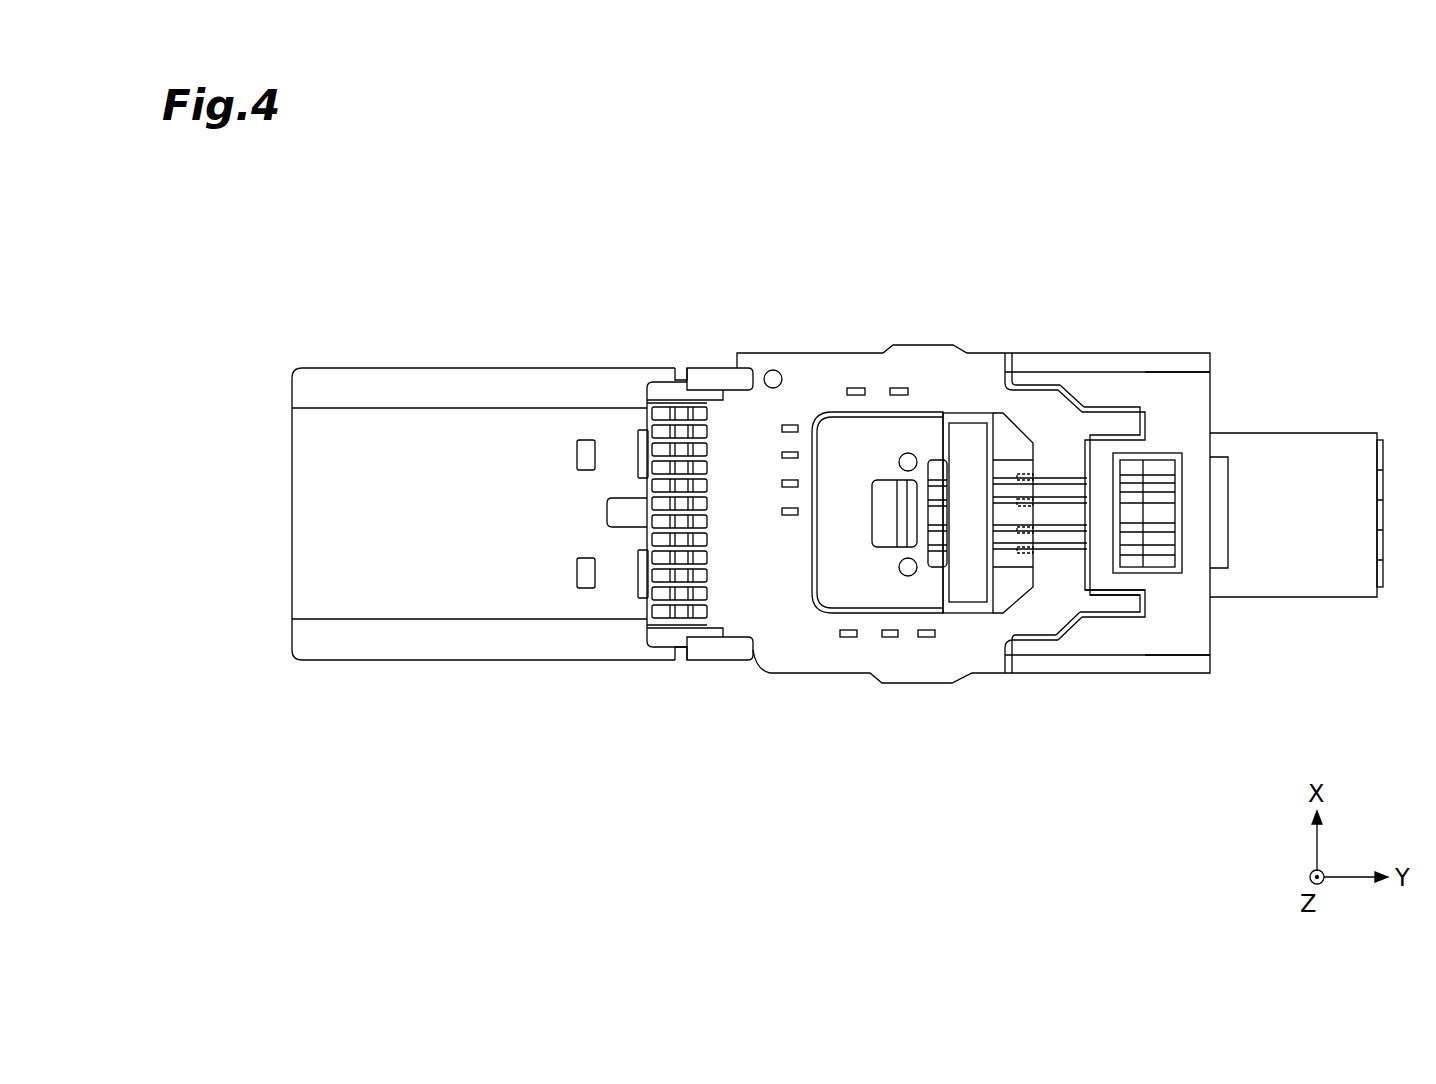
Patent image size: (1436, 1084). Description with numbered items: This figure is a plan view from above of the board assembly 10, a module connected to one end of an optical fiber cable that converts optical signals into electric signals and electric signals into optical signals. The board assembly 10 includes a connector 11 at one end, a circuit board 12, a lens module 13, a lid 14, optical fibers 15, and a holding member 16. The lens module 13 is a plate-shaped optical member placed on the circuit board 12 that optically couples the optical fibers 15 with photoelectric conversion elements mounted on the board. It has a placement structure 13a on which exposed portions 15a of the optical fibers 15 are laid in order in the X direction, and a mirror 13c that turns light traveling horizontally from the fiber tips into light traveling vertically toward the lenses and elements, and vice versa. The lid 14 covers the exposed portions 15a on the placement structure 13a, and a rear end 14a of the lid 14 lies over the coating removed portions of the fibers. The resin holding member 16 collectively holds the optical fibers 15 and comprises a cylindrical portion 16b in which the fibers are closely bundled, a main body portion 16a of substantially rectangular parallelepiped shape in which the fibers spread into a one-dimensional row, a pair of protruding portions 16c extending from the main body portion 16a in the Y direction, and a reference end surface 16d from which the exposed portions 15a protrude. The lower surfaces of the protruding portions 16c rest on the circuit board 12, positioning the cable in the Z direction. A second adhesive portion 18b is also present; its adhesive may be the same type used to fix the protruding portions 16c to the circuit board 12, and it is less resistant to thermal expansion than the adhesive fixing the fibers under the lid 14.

The board assembly 10 is at (502, 194).
The connector 11 is at (368, 387).
The circuit board 12 is at (800, 370).
The lens module 13 is at (835, 437).
The placement structure 13a is at (940, 460).
The mirror 13c is at (905, 498).
The lid 14 is at (972, 462).
The rear end 14a is at (1030, 585).
The optical fibers 15 is at (1135, 502).
The exposed portions 15a is at (1052, 478).
The holding member 16 is at (1126, 386).
The main body portion 16a is at (1180, 392).
The cylindrical portion 16b is at (1333, 457).
The protruding portions 16c is at (1076, 395).
The reference end surface 16d is at (1070, 585).
The second adhesive portion 18b is at (1020, 440).